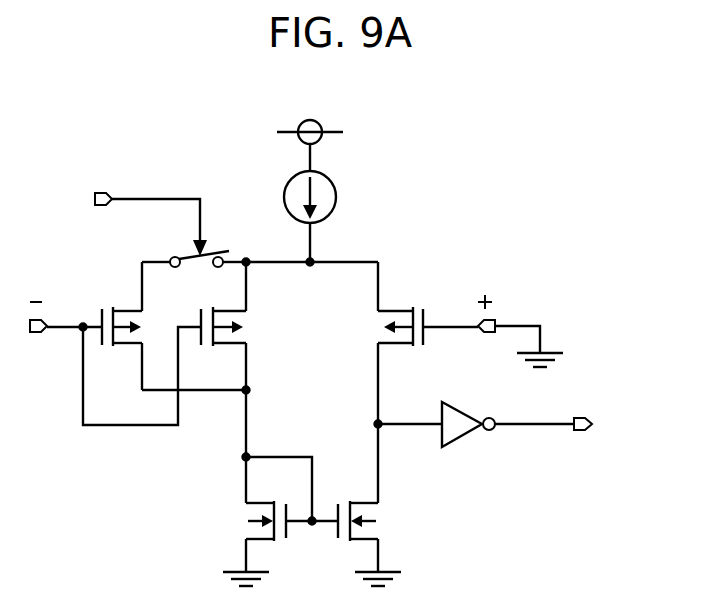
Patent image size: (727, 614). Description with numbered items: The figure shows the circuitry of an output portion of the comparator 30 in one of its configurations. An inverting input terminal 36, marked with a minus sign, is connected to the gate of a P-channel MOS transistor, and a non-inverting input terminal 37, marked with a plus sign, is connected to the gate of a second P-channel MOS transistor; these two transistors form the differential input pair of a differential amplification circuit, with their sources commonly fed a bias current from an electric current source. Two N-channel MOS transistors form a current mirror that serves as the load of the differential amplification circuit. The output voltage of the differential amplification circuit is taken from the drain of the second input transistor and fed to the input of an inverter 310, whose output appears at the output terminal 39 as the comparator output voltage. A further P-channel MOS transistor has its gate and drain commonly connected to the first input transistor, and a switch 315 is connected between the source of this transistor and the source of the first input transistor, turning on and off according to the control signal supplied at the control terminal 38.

The comparator 30 is at (416, 190).
The switch 315 is at (167, 247).
The control terminal CNTL 38 is at (100, 188).
The inverting input terminal 36 is at (35, 337).
The non-inverting input terminal 37 is at (487, 335).
The inverter 310 is at (462, 437).
The output terminal 39 is at (580, 435).